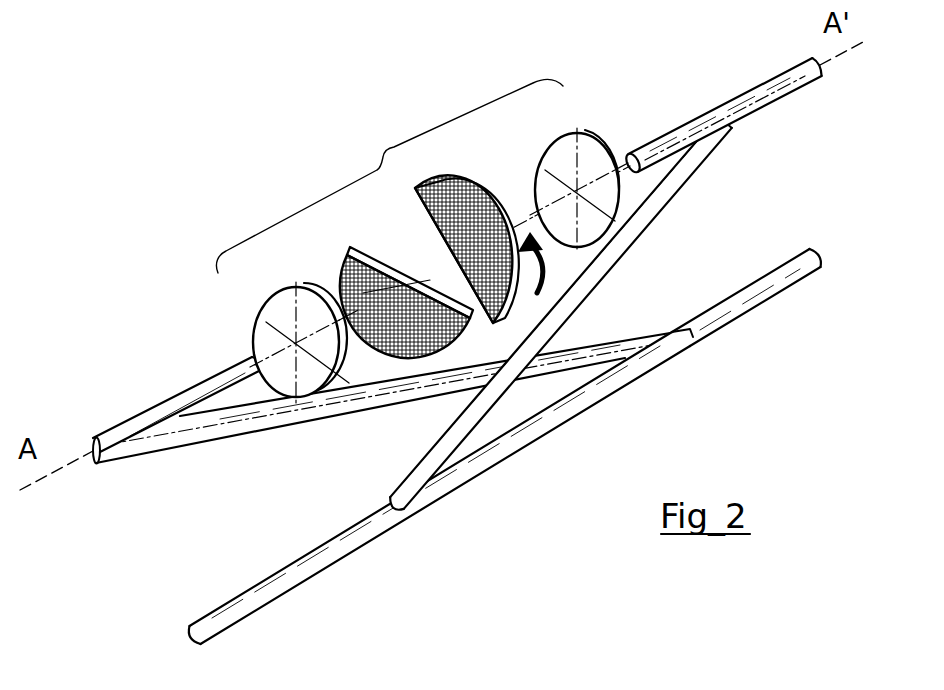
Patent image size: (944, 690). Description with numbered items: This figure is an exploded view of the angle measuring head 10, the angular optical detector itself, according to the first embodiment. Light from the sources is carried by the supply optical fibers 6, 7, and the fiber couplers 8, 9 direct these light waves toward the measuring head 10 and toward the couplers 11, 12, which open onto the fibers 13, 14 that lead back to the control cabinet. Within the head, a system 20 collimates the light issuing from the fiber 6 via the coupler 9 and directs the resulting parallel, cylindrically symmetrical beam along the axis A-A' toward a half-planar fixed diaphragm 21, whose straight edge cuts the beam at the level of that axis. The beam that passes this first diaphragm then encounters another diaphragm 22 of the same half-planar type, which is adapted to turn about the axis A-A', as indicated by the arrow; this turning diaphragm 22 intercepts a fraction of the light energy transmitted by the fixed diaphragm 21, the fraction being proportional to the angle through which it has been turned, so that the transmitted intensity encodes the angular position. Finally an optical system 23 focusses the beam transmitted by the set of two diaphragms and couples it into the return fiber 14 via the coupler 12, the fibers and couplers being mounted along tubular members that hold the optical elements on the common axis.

The supply optical fiber 6 is at (103, 440).
The supply optical fiber 7 is at (248, 596).
The fiber coupler 8 is at (393, 501).
The fiber coupler 9 is at (118, 440).
The measuring head 10 is at (389, 176).
The coupler 11 is at (671, 331).
The coupler 12 is at (729, 124).
The fiber 13 is at (769, 293).
The return fiber 14 is at (759, 93).
The collimating system 20 is at (288, 303).
The half-planar fixed diaphragm 21 is at (355, 244).
The turning diaphragm 22 is at (470, 169).
The optical system 23 is at (541, 158).